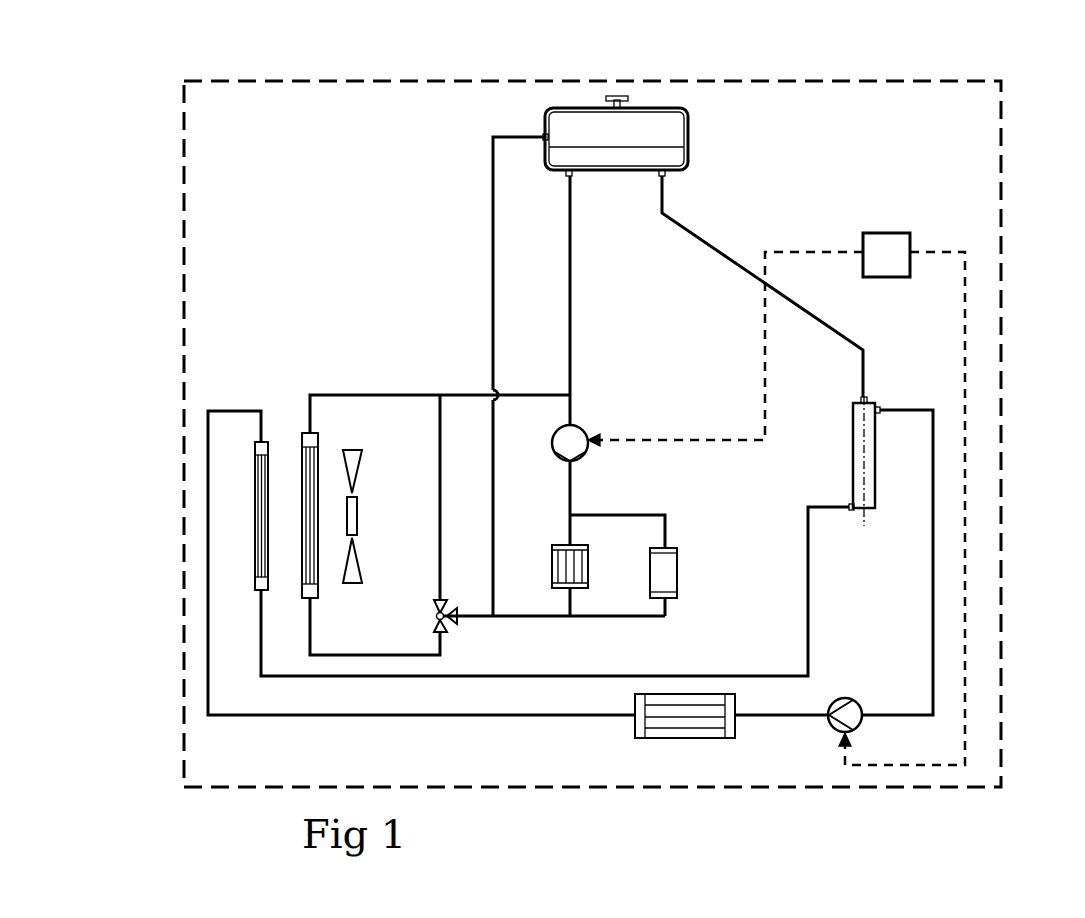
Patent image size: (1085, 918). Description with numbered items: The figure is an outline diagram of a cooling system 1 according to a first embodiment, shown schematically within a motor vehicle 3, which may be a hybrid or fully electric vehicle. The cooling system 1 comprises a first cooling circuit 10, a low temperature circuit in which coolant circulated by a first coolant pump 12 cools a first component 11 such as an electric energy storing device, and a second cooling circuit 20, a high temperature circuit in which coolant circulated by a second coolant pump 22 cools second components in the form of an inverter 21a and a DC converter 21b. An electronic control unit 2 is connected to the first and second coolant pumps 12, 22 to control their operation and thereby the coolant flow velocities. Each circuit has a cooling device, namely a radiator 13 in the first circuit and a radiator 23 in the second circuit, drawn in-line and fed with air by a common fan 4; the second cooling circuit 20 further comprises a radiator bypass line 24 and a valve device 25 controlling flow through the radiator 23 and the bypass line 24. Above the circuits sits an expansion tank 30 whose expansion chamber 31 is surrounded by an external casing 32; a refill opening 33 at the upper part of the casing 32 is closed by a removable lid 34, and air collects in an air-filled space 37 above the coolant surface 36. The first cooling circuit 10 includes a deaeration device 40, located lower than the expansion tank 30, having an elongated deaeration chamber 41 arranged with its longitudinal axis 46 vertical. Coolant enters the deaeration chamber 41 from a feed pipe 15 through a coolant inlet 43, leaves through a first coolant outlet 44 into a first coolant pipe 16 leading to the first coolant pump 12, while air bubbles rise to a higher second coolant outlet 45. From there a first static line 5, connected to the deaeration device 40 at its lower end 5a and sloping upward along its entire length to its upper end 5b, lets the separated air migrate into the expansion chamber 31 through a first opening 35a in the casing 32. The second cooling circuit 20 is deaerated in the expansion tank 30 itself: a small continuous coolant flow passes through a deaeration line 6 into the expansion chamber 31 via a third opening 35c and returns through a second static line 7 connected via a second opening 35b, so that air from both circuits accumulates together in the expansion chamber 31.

The cooling system 1 is at (412, 201).
The electronic control unit 2 is at (880, 238).
The motor vehicle 3 is at (980, 161).
The fan 4 is at (358, 462).
The first static line 5 is at (698, 246).
The lower end of first static line 5a is at (857, 398).
The upper end of first static line 5b is at (666, 178).
The deaeration line 6 is at (492, 294).
The second static line 7 is at (571, 300).
The first cooling circuit 10 is at (468, 732).
The first component 11 is at (682, 745).
The first coolant pump 12 is at (850, 704).
The cooling device 13 is at (255, 467).
The feed pipe 15 is at (807, 531).
The first coolant pipe 16 is at (931, 606).
The second cooling circuit 20 is at (404, 368).
The inverter 21a is at (556, 563).
The DC converter 21b is at (676, 578).
The second coolant pump 22 is at (585, 432).
The radiator 23 is at (316, 462).
The radiator bypass line 24 is at (438, 546).
The valve device 25 is at (430, 618).
The expansion tank 30 is at (632, 134).
The expansion chamber 31 is at (662, 130).
The external casing 32 is at (688, 156).
The refill opening 33 is at (592, 128).
The removable lid 34 is at (622, 99).
The first opening 35a is at (660, 177).
The second opening 35b is at (567, 177).
The third opening 35c is at (544, 136).
The coolant surface 36 is at (632, 146).
The air-filled space 37 is at (568, 122).
The deaeration device 40 is at (836, 472).
The deaeration chamber 41 is at (853, 432).
The coolant inlet 43 is at (851, 511).
The first coolant outlet 44 is at (878, 413).
The second coolant outlet 45 is at (866, 405).
The longitudinal axis 46 is at (866, 492).